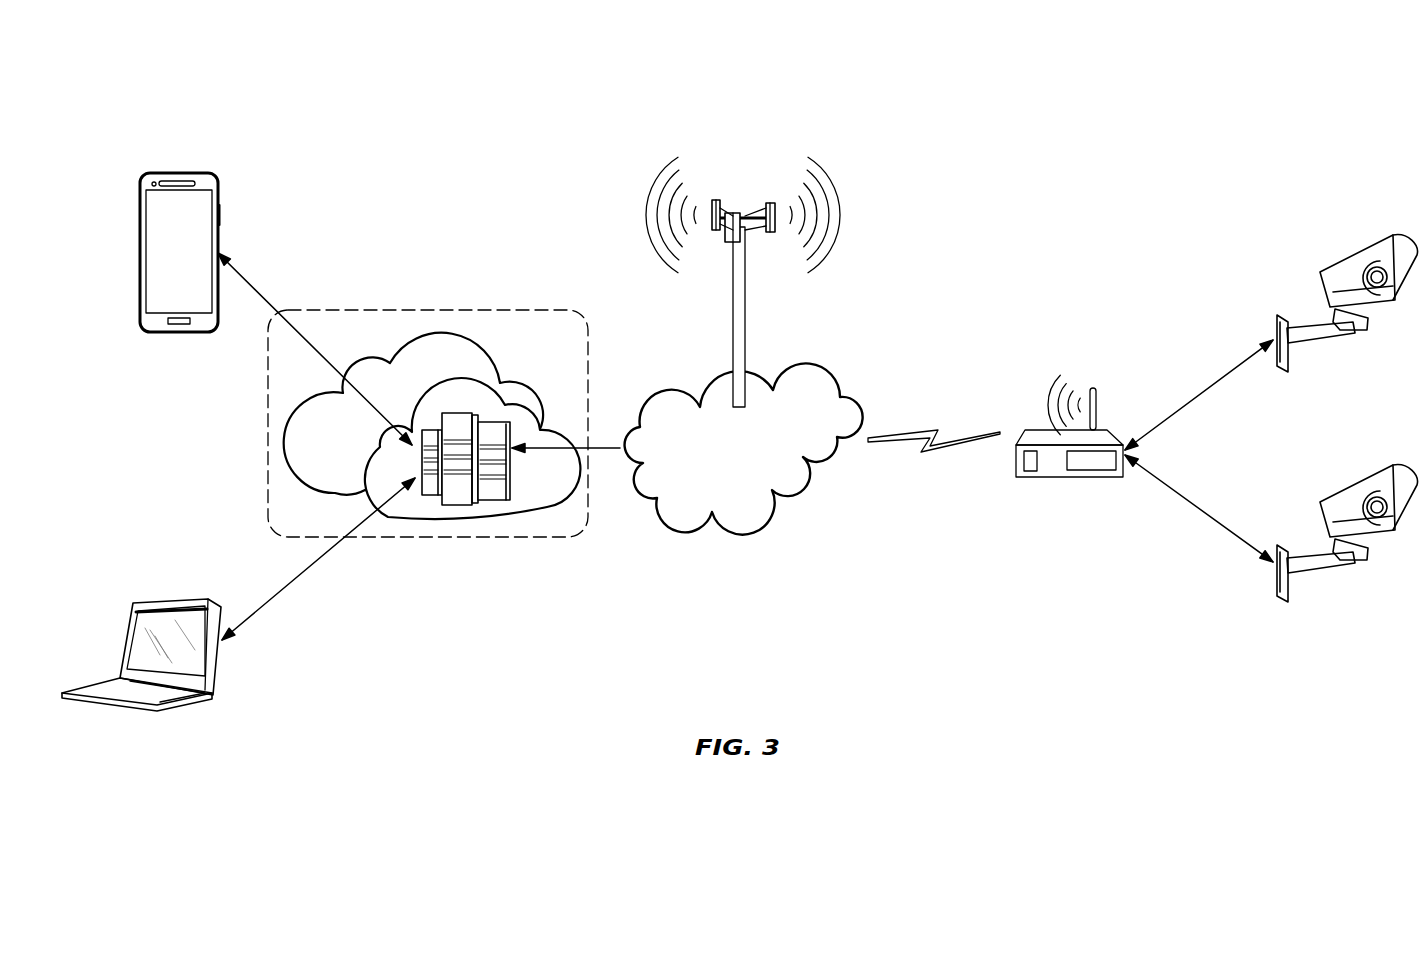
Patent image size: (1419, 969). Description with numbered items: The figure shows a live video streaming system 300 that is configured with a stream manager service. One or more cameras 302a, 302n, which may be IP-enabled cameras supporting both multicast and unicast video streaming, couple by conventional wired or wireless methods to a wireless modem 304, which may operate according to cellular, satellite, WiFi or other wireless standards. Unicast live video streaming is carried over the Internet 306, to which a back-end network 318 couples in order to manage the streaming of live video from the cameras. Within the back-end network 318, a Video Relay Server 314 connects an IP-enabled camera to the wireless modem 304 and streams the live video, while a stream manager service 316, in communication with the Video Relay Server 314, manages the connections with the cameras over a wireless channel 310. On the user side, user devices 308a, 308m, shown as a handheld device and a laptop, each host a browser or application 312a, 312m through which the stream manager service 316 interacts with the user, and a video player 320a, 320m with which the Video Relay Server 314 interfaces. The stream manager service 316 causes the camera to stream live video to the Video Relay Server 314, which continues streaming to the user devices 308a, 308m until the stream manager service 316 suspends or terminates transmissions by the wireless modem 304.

The live video streaming system 300 is at (1226, 120).
The camera 302a is at (1353, 250).
The camera 302n is at (1353, 480).
The wireless modem 304 is at (1095, 478).
The Internet 306 is at (721, 474).
The user device 308a is at (168, 233).
The user device 308m is at (165, 637).
The wireless channel 310 is at (945, 447).
The browser or application 312a is at (153, 200).
The browser or application 312m is at (150, 620).
The Video Relay Server 314 is at (527, 404).
The stream manager service 316 is at (498, 362).
The back-end network 318 is at (515, 310).
The video player 320a is at (153, 253).
The video player 320m is at (140, 643).